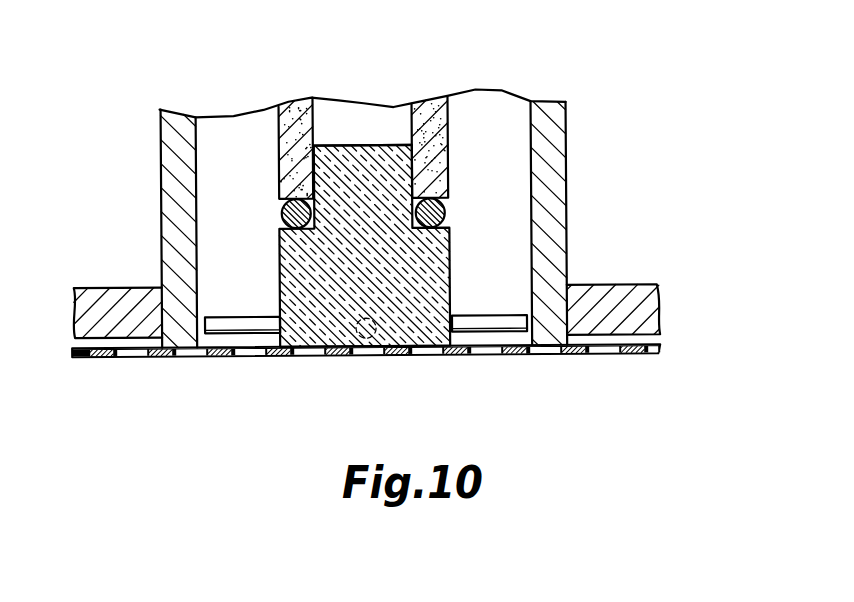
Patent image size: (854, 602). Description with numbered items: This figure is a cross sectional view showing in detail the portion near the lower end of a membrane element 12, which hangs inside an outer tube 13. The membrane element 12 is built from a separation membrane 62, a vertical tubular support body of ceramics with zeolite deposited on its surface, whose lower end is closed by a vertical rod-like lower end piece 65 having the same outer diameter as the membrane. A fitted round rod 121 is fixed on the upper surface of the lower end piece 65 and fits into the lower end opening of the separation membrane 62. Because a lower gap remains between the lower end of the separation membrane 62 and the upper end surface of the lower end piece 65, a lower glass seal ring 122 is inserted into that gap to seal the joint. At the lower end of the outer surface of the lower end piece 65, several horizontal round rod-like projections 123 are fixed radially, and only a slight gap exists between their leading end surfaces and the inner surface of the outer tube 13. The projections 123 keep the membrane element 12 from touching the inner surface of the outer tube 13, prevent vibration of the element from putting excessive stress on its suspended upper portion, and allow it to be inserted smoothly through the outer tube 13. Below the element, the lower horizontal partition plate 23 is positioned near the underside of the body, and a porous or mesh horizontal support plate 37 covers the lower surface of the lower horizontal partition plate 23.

The membrane element 12 is at (270, 87).
The outer tube 13 is at (173, 140).
The lower horizontal partition plate 23 is at (642, 301).
The horizontal support plate 37 is at (630, 355).
The separation membrane 62 is at (443, 120).
The lower end piece 65 is at (300, 252).
The fitted round rod 121 is at (354, 145).
The lower glass seal ring 122 is at (449, 216).
The horizontal round rod-like projection 123 is at (360, 350).